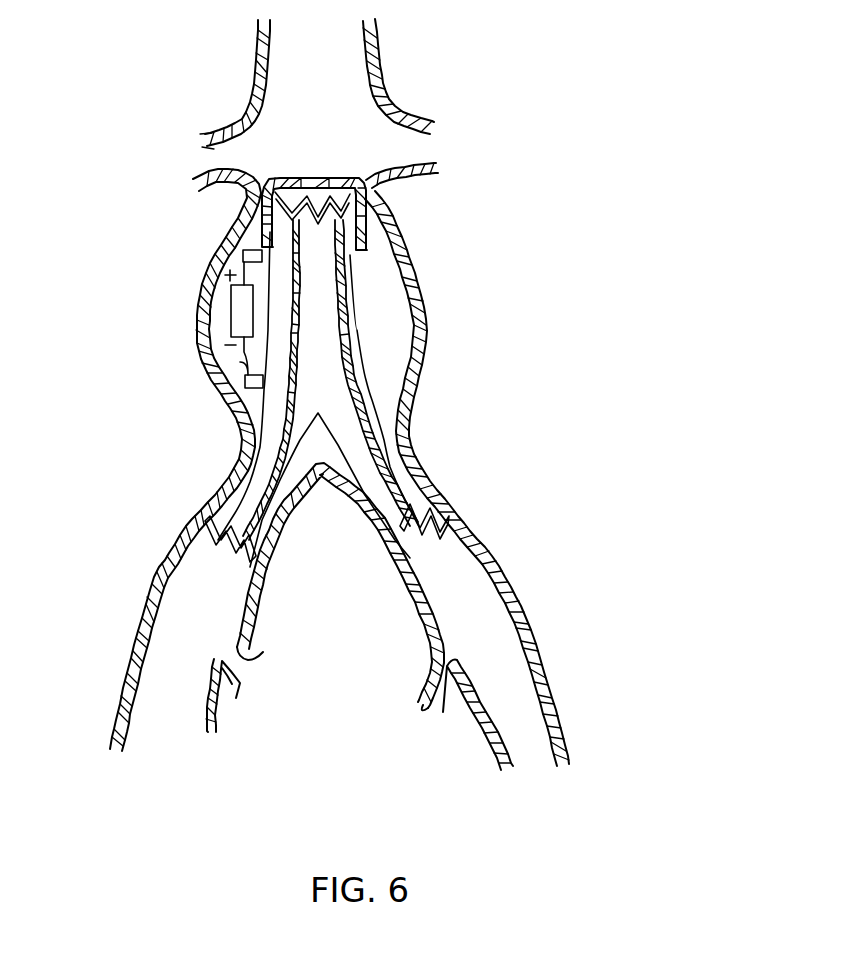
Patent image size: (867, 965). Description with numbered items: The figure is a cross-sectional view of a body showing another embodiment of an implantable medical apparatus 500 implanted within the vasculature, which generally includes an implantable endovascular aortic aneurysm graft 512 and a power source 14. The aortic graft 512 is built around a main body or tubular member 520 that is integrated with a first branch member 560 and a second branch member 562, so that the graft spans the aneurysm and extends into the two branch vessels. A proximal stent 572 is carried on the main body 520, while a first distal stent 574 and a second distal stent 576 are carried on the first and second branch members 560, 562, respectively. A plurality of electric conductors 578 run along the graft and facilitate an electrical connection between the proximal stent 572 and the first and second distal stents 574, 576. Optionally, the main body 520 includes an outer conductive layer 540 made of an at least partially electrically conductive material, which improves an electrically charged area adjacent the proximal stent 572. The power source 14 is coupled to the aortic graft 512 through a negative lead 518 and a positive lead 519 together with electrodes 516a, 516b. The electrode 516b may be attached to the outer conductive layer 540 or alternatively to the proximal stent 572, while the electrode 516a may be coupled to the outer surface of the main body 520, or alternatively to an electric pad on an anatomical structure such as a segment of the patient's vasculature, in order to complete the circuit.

The implantable medical apparatus 500 is at (158, 108).
The proximal stent 572 is at (353, 175).
The outer conductive layer 540 is at (366, 238).
The main body 520 is at (368, 267).
The implantable endovascular aortic aneurysm graft 512 is at (380, 293).
The electric conductors 578 is at (352, 322).
The second branch member 562 is at (396, 490).
The second distal stent 576 is at (428, 548).
The electrode 516b is at (256, 241).
The positive lead 519 is at (228, 258).
The power source 14 is at (230, 308).
The negative lead 518 is at (240, 362).
The electrode 516a is at (251, 394).
The first branch member 560 is at (205, 540).
The first distal stent 574 is at (212, 541).